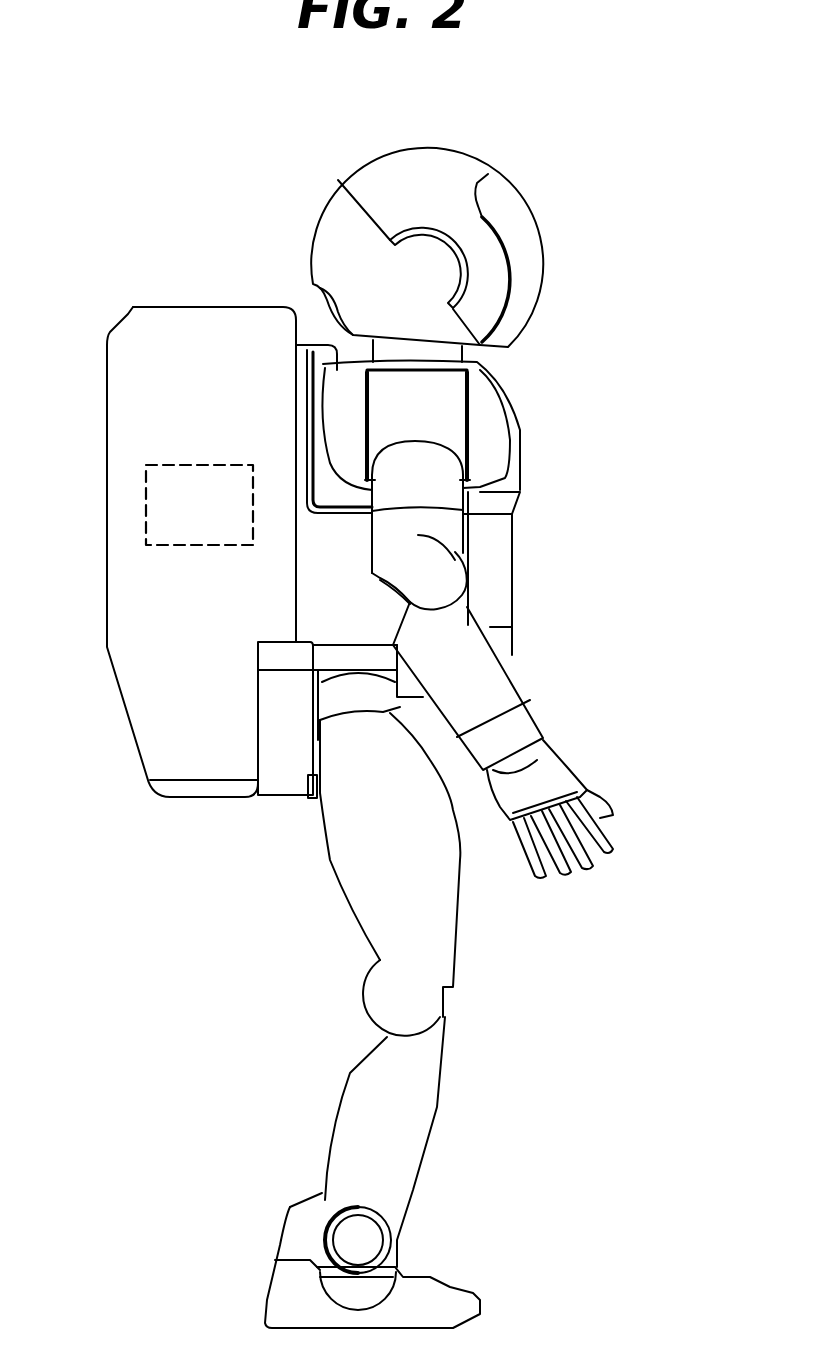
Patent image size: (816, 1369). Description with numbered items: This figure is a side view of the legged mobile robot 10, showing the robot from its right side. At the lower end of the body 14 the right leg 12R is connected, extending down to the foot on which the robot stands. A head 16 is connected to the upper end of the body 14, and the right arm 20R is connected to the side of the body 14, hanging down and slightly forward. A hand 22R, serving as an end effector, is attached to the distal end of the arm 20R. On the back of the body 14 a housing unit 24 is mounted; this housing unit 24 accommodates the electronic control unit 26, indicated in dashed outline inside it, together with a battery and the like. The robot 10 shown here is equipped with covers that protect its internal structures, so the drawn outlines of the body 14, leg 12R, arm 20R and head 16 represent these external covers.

The legged mobile robot 10 is at (547, 396).
The right leg 12R is at (488, 1010).
The body 14 is at (502, 560).
The head 16 is at (380, 154).
The right arm 20R is at (559, 679).
The right hand 22R is at (555, 775).
The housing unit 24 is at (188, 307).
The electronic control unit 26 is at (146, 513).